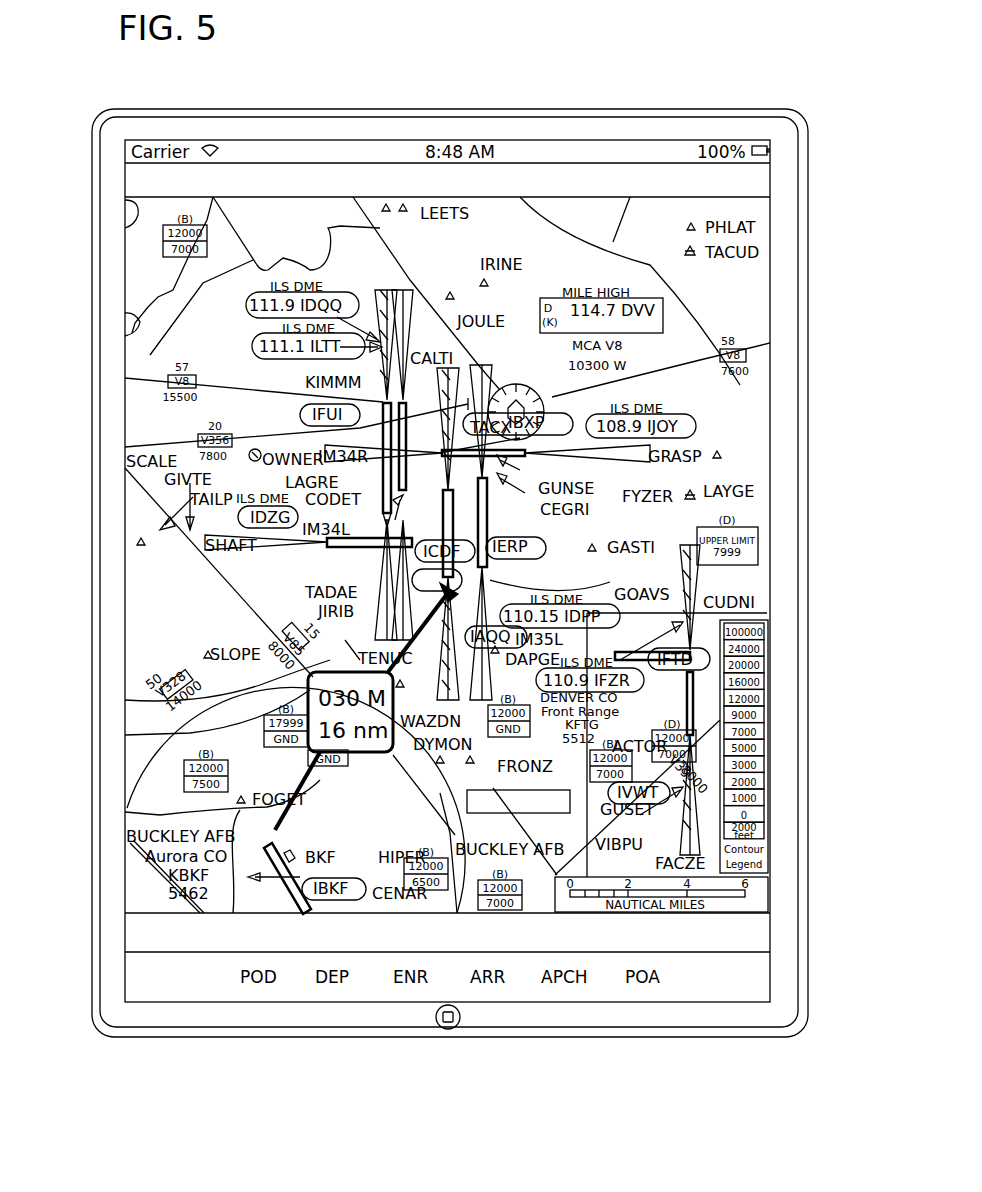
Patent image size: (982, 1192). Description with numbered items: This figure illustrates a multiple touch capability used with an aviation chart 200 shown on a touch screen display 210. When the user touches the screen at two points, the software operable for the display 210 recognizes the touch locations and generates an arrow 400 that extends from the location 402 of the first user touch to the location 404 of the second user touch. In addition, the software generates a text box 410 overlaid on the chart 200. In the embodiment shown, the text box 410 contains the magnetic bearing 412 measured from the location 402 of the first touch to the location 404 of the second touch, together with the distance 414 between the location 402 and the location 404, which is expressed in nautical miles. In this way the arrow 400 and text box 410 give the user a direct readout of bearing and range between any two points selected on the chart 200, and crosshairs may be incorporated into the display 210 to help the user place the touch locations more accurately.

The chart 200 is at (740, 284).
The display 210 is at (128, 346).
The arrow 400 is at (125, 811).
The location of first user touch 402 is at (233, 913).
The location of second user touch 404 is at (610, 582).
The text box 410 is at (447, 880).
The magnetic bearing 412 is at (262, 618).
The distance 414 is at (125, 736).